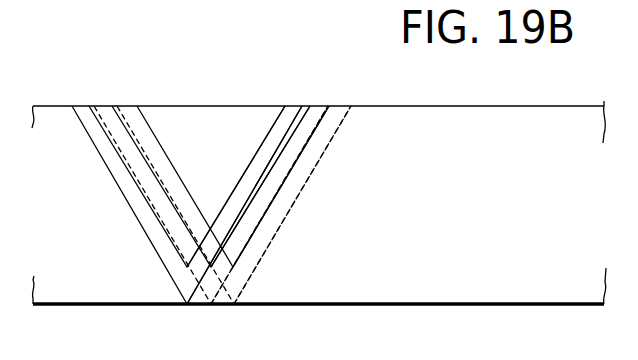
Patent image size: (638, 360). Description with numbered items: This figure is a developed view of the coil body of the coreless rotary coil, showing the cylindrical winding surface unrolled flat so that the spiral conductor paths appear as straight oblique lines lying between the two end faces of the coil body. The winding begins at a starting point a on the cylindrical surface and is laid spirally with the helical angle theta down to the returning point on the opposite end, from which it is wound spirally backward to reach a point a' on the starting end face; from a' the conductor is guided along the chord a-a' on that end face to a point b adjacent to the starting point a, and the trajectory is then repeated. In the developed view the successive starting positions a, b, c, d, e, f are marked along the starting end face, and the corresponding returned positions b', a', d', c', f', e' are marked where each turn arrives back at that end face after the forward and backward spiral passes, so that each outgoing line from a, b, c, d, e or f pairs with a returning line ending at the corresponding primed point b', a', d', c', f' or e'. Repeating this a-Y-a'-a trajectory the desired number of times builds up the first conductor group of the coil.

The starting point a is at (177, 174).
The point adjacent to the starting point b is at (178, 156).
The incident ray c is at (209, 174).
The incident ray d is at (208, 156).
The incident ray e is at (234, 174).
The incident ray f is at (233, 156).
The reflected ray b' is at (236, 156).
The end-face point a' is at (245, 174).
The reflected ray d' is at (263, 156).
The reflected ray c' is at (273, 174).
The reflected ray f' is at (294, 156).
The reflected ray e' is at (305, 174).